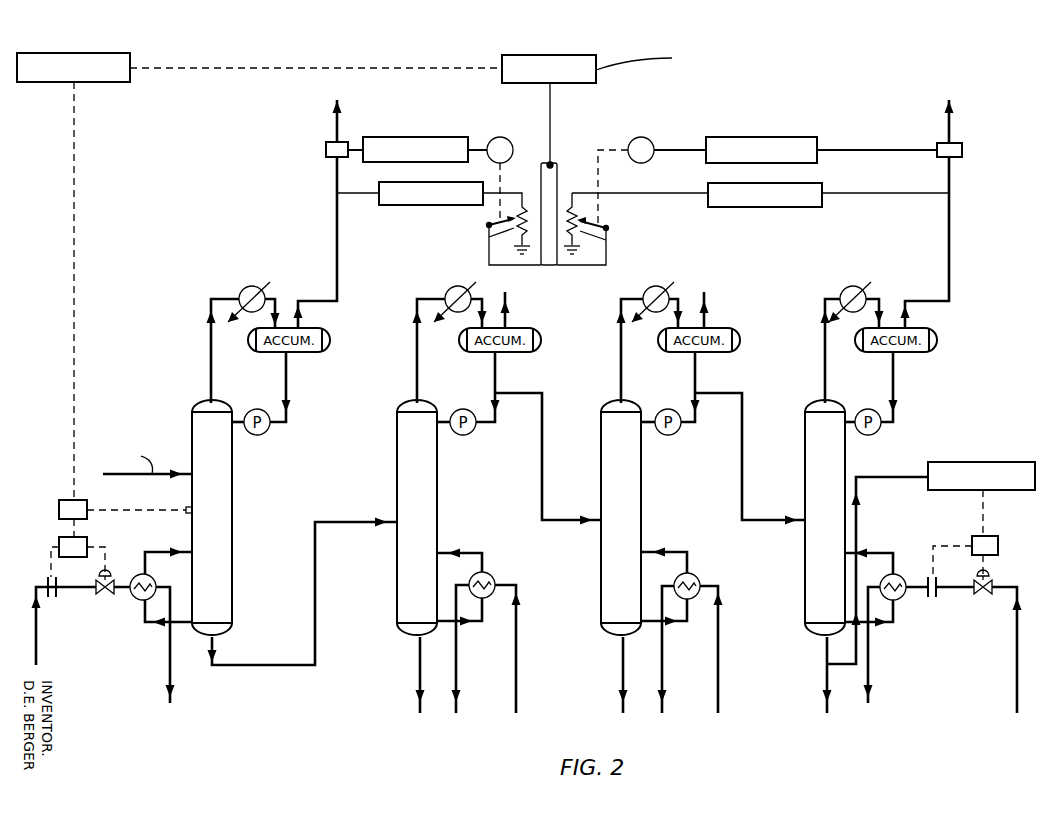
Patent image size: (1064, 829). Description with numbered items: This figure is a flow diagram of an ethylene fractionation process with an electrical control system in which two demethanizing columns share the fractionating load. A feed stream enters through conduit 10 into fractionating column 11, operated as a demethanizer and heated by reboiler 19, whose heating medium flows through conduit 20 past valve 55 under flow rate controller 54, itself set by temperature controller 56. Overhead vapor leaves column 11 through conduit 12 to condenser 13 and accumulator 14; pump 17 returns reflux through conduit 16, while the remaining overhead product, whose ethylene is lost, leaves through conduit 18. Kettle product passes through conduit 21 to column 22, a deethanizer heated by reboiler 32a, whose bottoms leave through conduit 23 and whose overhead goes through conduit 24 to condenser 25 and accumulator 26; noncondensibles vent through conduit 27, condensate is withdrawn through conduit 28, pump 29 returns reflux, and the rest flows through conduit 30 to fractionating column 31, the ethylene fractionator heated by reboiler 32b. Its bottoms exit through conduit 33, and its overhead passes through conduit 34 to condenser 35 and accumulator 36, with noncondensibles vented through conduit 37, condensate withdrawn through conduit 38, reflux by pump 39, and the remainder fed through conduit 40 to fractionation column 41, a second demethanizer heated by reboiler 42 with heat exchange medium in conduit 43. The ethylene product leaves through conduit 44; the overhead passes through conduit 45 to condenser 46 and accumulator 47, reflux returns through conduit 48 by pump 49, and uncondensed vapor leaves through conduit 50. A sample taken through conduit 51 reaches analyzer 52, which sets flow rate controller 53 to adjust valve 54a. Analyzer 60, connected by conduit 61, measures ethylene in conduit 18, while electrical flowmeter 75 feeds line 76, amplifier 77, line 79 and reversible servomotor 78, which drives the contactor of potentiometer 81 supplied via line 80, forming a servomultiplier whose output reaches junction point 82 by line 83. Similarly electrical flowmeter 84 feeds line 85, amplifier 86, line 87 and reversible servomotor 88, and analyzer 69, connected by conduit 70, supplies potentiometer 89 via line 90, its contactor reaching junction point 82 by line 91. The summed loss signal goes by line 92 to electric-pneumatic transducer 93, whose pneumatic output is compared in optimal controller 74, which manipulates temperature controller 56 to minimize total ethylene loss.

The conduit 10 is at (150, 474).
The fractionating column 11 is at (232, 580).
The conduit 12 is at (211, 366).
The condenser 13 is at (242, 292).
The accumulator 14 is at (322, 352).
The conduit 16 is at (286, 415).
The pump 17 is at (265, 432).
The conduit 18 is at (337, 232).
The reboiler 19 is at (152, 577).
The conduit 20 is at (36, 655).
The conduit 21 is at (315, 666).
The column 22 is at (397, 574).
The conduit 23 is at (420, 668).
The conduit 24 is at (417, 366).
The condenser 25 is at (447, 292).
The accumulator 26 is at (542, 352).
The conduit 27 is at (507, 300).
The conduit 28 is at (495, 366).
The pump 29 is at (468, 434).
The conduit 30 is at (542, 445).
The fractionating column 31 is at (601, 574).
The reboiler 32a is at (493, 575).
The reboiler 32b is at (697, 575).
The conduit 33 is at (623, 668).
The conduit 34 is at (621, 366).
The condenser 35 is at (645, 292).
The accumulator 36 is at (738, 352).
The conduit 37 is at (708, 300).
The conduit 38 is at (695, 410).
The pump 39 is at (677, 434).
The conduit 40 is at (742, 445).
The fractionation column 41 is at (805, 540).
The reboiler 42 is at (900, 597).
The conduit 43 is at (1017, 668).
The conduit 44 is at (827, 668).
The conduit 45 is at (825, 366).
The condenser 46 is at (843, 292).
The accumulator 47 is at (905, 352).
The conduit 48 is at (893, 366).
The pump 49 is at (878, 434).
The conduit 50 is at (949, 228).
The conduit 51 is at (856, 540).
The analyzer 52 is at (998, 462).
The flow rate controller 53 is at (998, 540).
The flow rate controller 54 is at (87, 540).
The valve 54a is at (983, 595).
The valve 55 is at (105, 595).
The temperature controller 56 is at (59, 505).
The analyzer 60 is at (412, 205).
The conduit 61 is at (370, 197).
The analyzer 69 is at (815, 207).
The conduit 70 is at (890, 198).
The optimal controller 74 is at (127, 56).
The electrical flowmeter 75 is at (330, 142).
The line 76 is at (356, 148).
The amplifier 77 is at (392, 137).
The reversible servomotor 78 is at (500, 137).
The line 79 is at (476, 148).
The line 80 is at (503, 188).
The potentiometer 81 is at (489, 237).
The junction point 82 is at (550, 160).
The line 83 is at (489, 262).
The electrical flowmeter 84 is at (937, 143).
The line 85 is at (868, 148).
The amplifier 86 is at (742, 137).
The line 87 is at (680, 148).
The reversible servomotor 88 is at (636, 137).
The potentiometer 89 is at (607, 240).
The line 90 is at (698, 196).
The line 91 is at (606, 262).
The line 92 is at (550, 98).
The electric-pneumatic transducer 93 is at (502, 52).